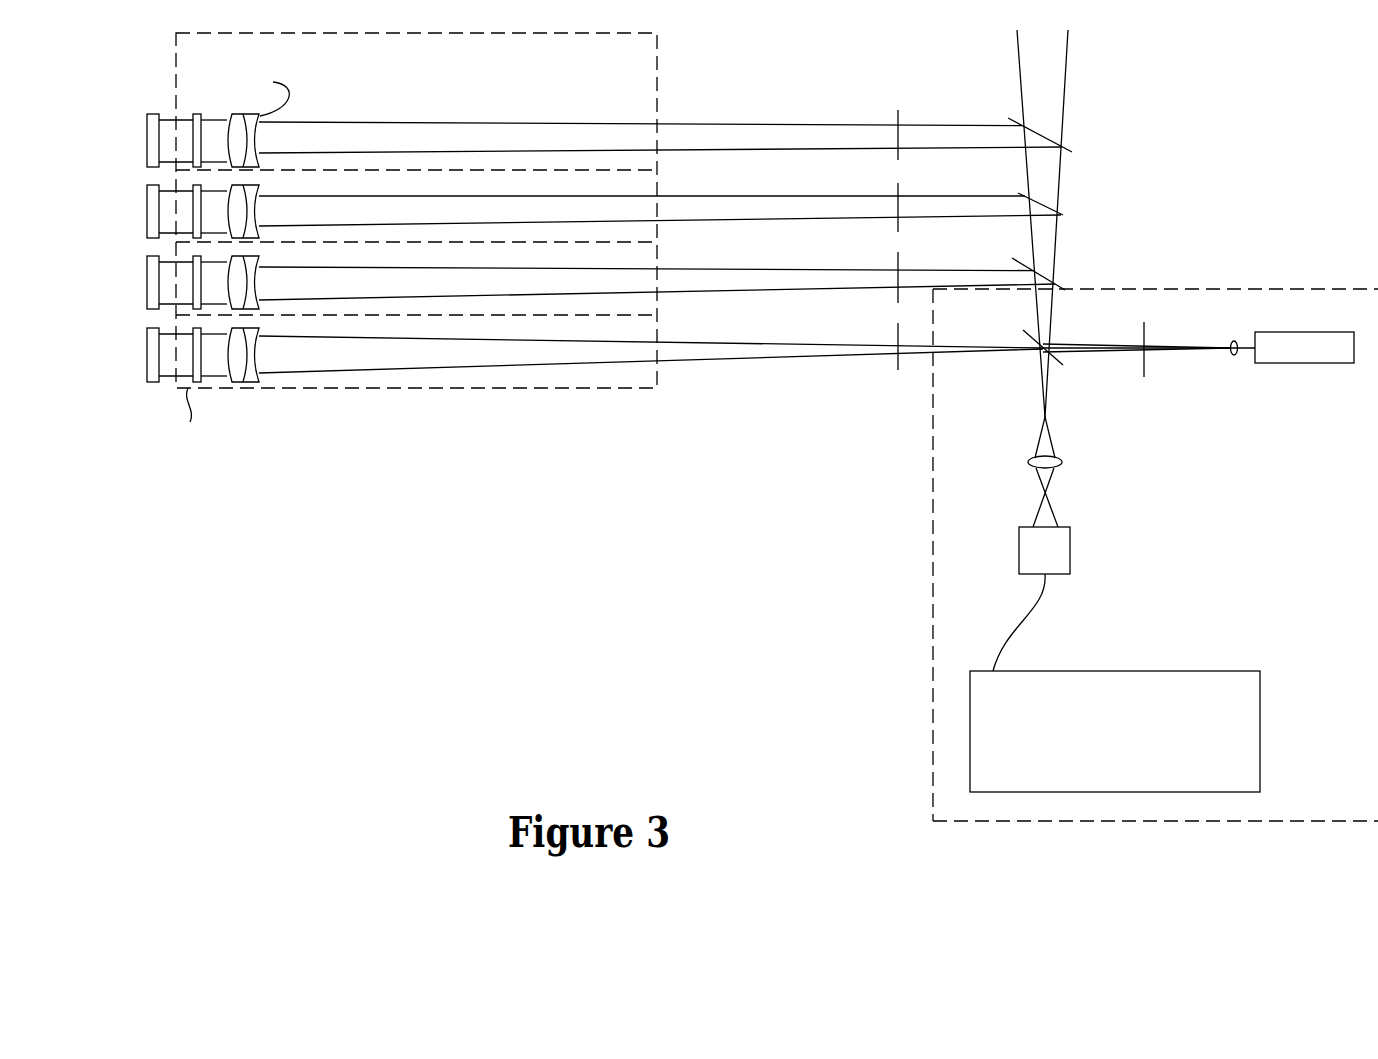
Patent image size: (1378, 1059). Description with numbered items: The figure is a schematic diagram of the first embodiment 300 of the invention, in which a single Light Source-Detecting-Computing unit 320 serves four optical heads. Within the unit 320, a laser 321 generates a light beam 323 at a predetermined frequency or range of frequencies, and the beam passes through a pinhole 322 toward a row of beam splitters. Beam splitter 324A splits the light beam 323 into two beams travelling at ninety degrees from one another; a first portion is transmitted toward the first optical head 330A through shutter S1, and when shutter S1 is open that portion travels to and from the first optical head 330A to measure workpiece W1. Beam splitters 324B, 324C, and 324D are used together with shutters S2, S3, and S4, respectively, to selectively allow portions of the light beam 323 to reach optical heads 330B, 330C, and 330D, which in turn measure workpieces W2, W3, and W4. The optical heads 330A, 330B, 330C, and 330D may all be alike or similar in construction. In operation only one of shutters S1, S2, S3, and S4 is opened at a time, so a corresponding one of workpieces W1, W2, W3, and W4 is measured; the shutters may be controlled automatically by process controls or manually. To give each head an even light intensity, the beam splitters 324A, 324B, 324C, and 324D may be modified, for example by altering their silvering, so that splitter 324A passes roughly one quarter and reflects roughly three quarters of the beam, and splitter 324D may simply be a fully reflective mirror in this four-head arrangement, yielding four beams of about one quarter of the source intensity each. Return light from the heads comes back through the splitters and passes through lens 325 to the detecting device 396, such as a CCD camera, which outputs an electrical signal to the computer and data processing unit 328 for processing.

The first embodiment 300 is at (585, 610).
The Light Source-Detecting-Computing unit 320 is at (1350, 782).
The laser 321 is at (1342, 332).
The pinhole 322 is at (1141, 358).
The light beam 323 is at (1173, 352).
The beam splitter 324A is at (1040, 365).
The beam splitter 324B is at (1063, 290).
The beam splitter 324C is at (1063, 215).
The beam splitter 324D is at (1068, 148).
The lens 325 is at (1032, 460).
The computer and data processing unit 328 is at (1115, 731).
The detecting device 396 is at (1019, 550).
The first optical head 330A is at (657, 378).
The optical head 330B is at (658, 255).
The optical head 330C is at (658, 183).
The optical head 330D is at (658, 97).
The shutter S1 is at (898, 340).
The shutter S2 is at (898, 270).
The shutter S3 is at (898, 198).
The shutter S4 is at (898, 110).
The workpiece W1 is at (118, 355).
The workpiece W2 is at (118, 282).
The workpiece W3 is at (118, 211).
The workpiece W4 is at (118, 140).